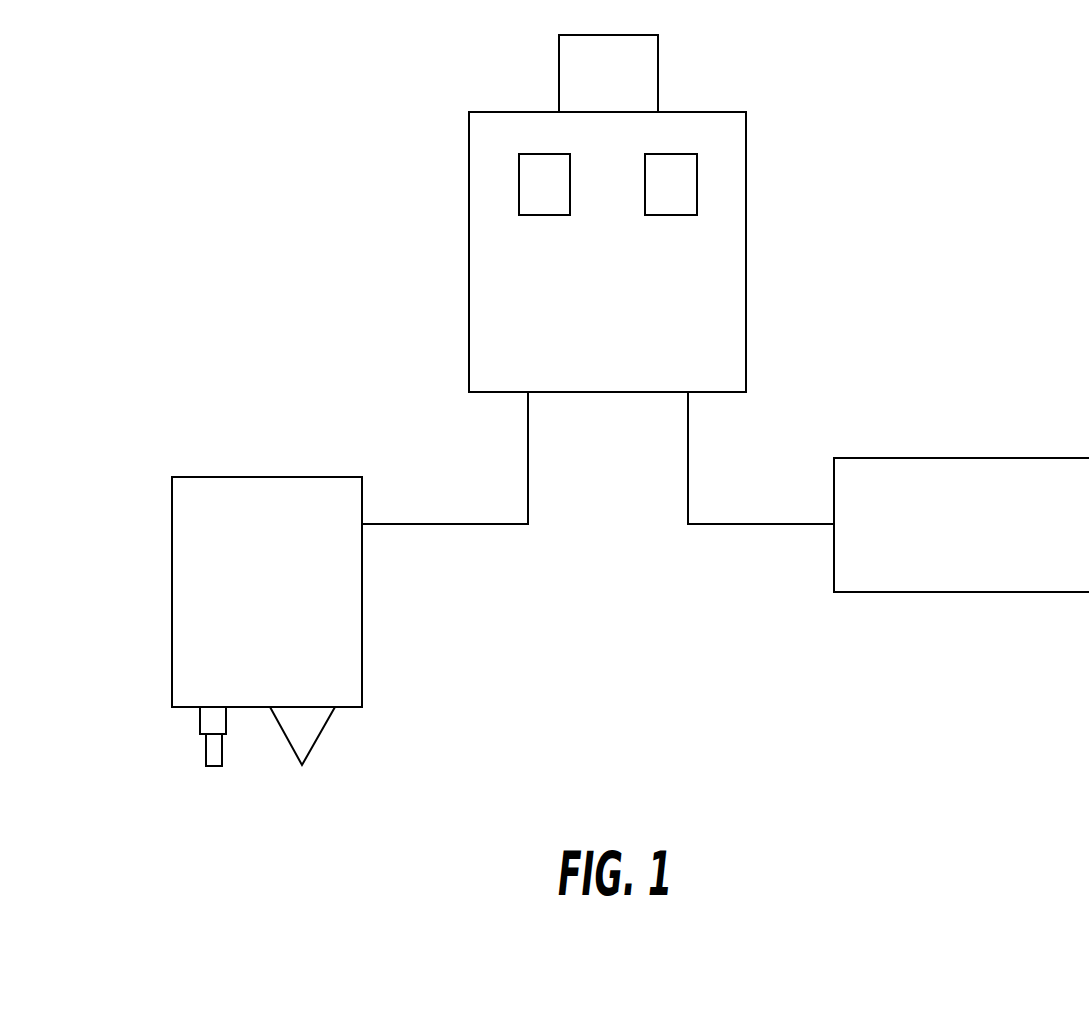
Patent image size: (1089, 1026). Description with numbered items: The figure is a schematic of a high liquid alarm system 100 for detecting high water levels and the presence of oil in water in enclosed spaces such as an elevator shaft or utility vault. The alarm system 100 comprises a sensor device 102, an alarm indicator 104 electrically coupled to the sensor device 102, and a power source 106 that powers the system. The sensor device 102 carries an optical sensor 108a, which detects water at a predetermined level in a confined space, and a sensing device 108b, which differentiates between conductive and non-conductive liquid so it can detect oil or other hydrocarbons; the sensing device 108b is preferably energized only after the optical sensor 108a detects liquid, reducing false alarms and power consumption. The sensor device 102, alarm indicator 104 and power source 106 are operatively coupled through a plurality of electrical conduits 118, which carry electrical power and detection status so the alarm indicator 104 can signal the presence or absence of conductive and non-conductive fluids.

The high liquid alarm system 100 is at (897, 210).
The sensor device 102 is at (267, 477).
The alarm indicator 104 is at (746, 163).
The power source 106 is at (962, 458).
The optical sensor 108a is at (320, 733).
The sensing device 108b is at (203, 752).
The electrical conduits 118 is at (500, 525).